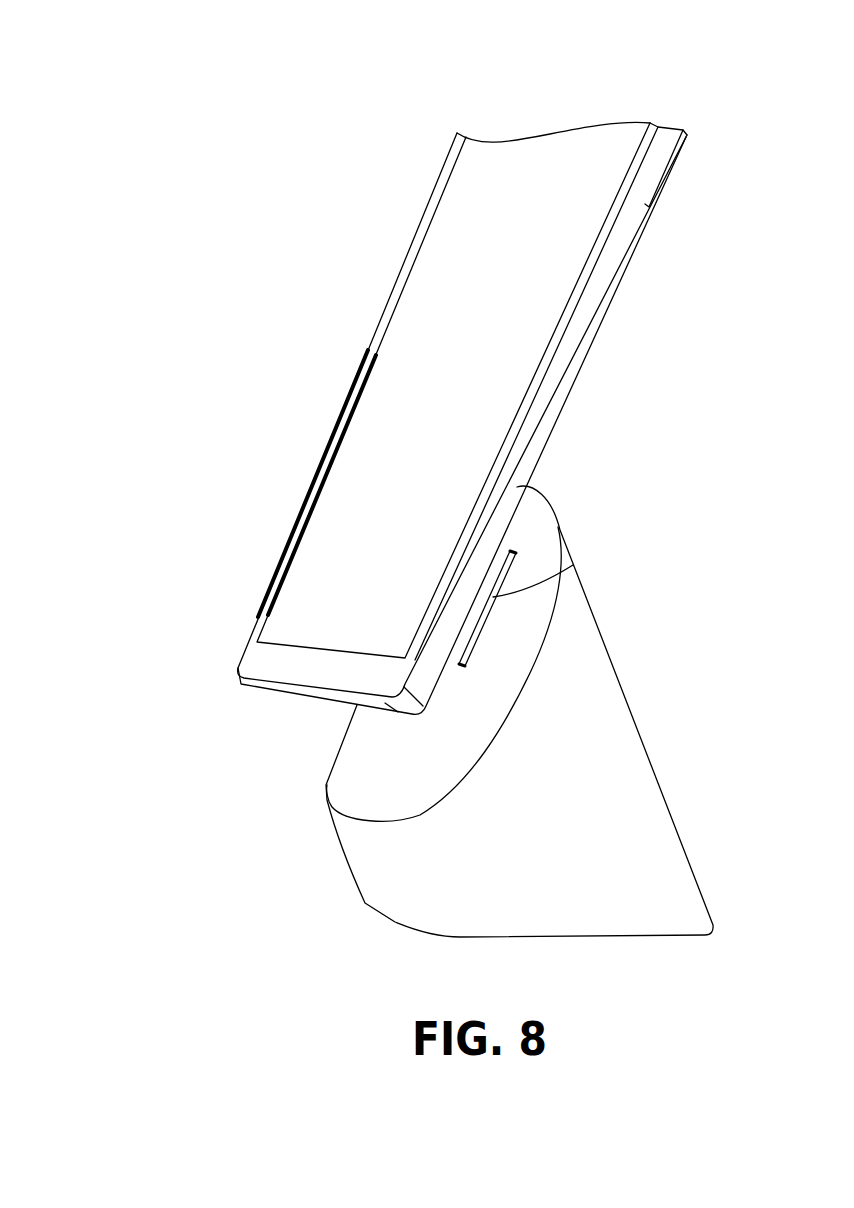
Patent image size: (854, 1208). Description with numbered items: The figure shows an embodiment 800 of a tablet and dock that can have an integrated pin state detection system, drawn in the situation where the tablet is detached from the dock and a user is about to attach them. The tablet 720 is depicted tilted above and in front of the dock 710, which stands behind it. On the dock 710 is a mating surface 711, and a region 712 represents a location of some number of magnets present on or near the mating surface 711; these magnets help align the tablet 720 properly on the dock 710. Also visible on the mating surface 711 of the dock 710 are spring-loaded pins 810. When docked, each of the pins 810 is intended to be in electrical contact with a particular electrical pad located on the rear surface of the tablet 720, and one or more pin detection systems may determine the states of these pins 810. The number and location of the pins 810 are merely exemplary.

The embodiment 800 is at (137, 71).
The tablet 720 is at (358, 141).
The region 712 is at (490, 602).
The mating surface 711 is at (482, 725).
The dock 710 is at (334, 896).
The spring-loaded pins 810 is at (359, 762).